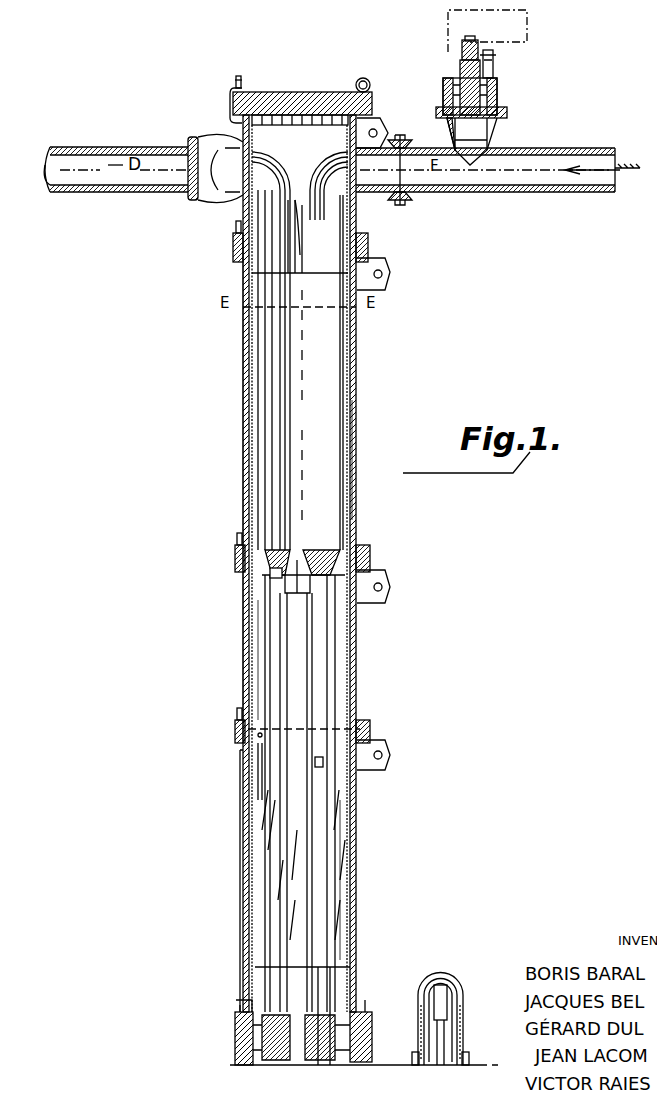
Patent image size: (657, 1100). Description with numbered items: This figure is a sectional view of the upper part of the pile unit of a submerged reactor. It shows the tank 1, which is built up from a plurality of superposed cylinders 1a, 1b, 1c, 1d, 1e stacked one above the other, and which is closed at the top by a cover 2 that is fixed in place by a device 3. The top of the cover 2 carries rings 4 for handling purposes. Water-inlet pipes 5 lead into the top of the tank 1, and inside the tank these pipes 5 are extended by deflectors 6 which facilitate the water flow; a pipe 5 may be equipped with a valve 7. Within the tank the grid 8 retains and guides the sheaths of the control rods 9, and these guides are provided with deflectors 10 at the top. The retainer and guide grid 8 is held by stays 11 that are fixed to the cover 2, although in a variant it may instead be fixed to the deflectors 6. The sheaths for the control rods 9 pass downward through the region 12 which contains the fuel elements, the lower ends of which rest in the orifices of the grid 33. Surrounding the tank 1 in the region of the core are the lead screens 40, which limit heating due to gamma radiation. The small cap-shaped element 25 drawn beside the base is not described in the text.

The tank 1 is at (318, 348).
The superposed cylinder 1a is at (235, 210).
The superposed cylinder 1b is at (242, 372).
The superposed cylinder 1c is at (245, 630).
The superposed cylinder 1d is at (258, 762).
The superposed cylinder 1e is at (240, 1062).
The cover 2 is at (281, 92).
The fixing device 3 is at (230, 98).
The handling ring 4 is at (362, 77).
The water-inlet pipe 5 is at (78, 185).
The deflector 6 is at (300, 255).
The valve 7 is at (515, 104).
The retainer and guide grid 8 is at (298, 560).
The control rod sheath 9 is at (258, 672).
The deflector 10 is at (274, 548).
The stay 11 is at (352, 470).
The fuel element region 12 is at (350, 868).
The cap 25 is at (428, 972).
The grid 33 is at (360, 1030).
The lead screen 40 is at (243, 820).